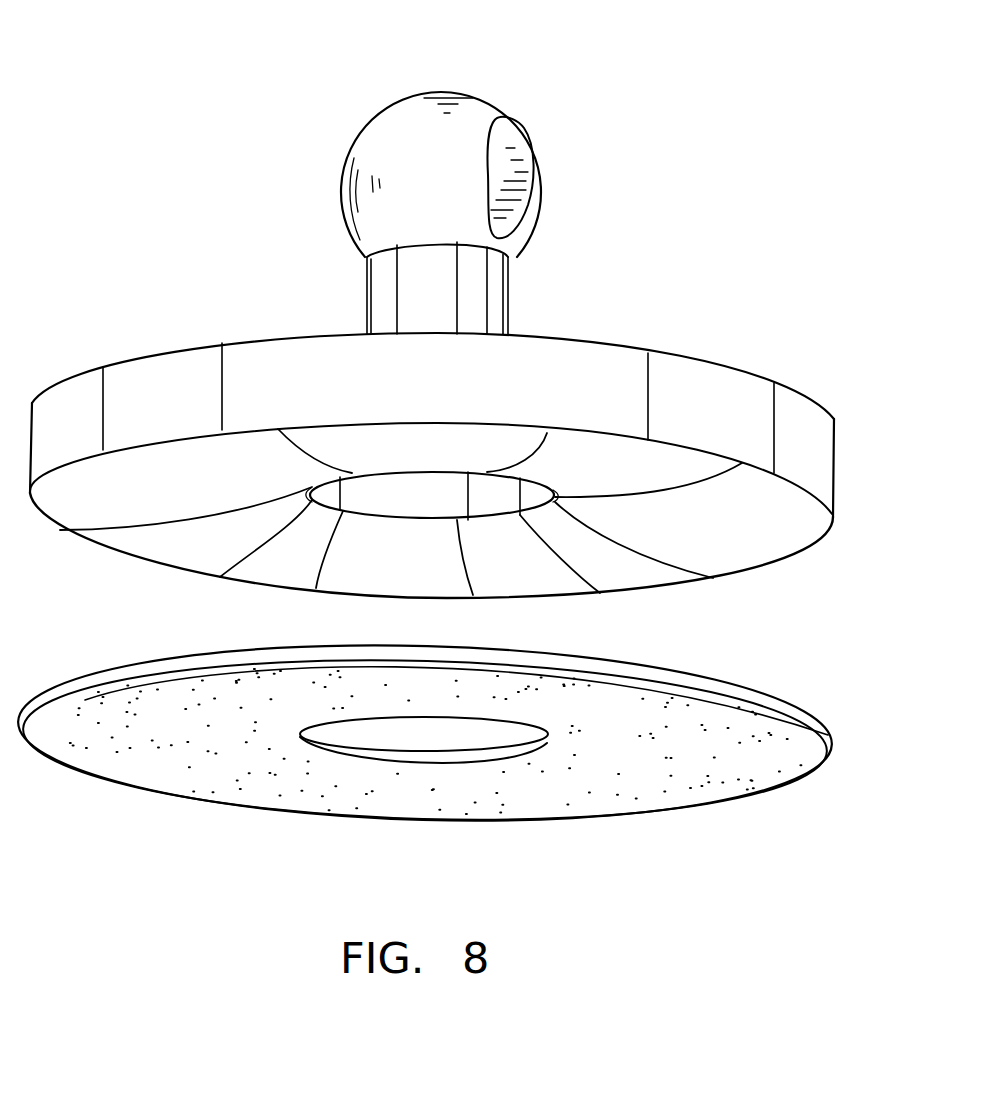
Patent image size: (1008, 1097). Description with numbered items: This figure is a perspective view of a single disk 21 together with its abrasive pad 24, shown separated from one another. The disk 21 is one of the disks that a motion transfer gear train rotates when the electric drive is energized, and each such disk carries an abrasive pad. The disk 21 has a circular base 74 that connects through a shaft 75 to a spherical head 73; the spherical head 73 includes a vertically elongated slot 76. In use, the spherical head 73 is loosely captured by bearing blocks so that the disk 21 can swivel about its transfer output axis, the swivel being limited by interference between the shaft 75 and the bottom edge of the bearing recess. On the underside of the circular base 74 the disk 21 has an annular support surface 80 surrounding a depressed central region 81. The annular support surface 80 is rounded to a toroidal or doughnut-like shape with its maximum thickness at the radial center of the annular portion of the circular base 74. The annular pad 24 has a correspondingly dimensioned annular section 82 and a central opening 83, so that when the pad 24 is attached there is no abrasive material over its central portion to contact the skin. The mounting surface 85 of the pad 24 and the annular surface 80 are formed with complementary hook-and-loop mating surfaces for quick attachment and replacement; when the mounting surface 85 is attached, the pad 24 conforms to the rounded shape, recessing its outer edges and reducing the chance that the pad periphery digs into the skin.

The disk 21 is at (752, 291).
The spherical head 73 is at (445, 87).
The circular base 74 is at (820, 445).
The shaft 75 is at (423, 290).
The vertically elongated slot 76 is at (512, 178).
The annular support surface 80 is at (640, 553).
The depressed central region 81 is at (387, 497).
The annular section 82 is at (793, 717).
The central opening 83 is at (372, 737).
The mounting surface 85 is at (183, 663).
The annular pad 24 is at (675, 782).